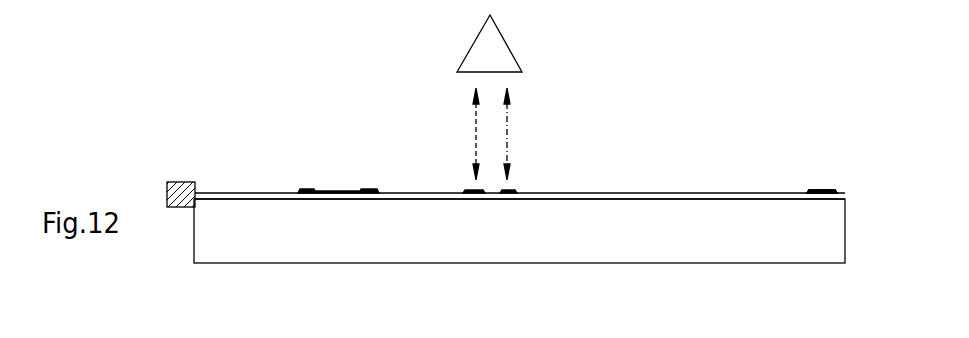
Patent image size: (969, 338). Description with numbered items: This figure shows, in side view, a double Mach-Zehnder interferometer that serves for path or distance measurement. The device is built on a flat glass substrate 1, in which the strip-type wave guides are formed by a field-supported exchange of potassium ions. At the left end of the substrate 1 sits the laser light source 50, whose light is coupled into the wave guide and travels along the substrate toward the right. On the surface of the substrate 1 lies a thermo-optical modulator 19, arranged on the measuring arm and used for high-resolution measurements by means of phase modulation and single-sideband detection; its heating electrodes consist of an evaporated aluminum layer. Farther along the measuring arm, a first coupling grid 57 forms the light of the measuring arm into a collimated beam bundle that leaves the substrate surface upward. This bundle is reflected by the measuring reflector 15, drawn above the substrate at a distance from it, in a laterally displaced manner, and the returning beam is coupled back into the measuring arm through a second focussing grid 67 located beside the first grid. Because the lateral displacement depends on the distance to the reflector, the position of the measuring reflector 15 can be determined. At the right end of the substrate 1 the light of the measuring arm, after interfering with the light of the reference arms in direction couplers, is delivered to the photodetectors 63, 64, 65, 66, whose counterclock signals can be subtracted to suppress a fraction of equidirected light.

The glass substrate 1 is at (722, 254).
The laser light source 50 is at (183, 182).
The thermo-optical modulator 19 is at (308, 188).
The first coupling grid 57 is at (466, 188).
The second focussing grid 67 is at (512, 188).
The photodetector 63 is at (813, 190).
The photodetector 64 is at (822, 191).
The photodetector 65 is at (822, 191).
The photodetector 66 is at (822, 191).
The measuring reflector 15 is at (500, 43).